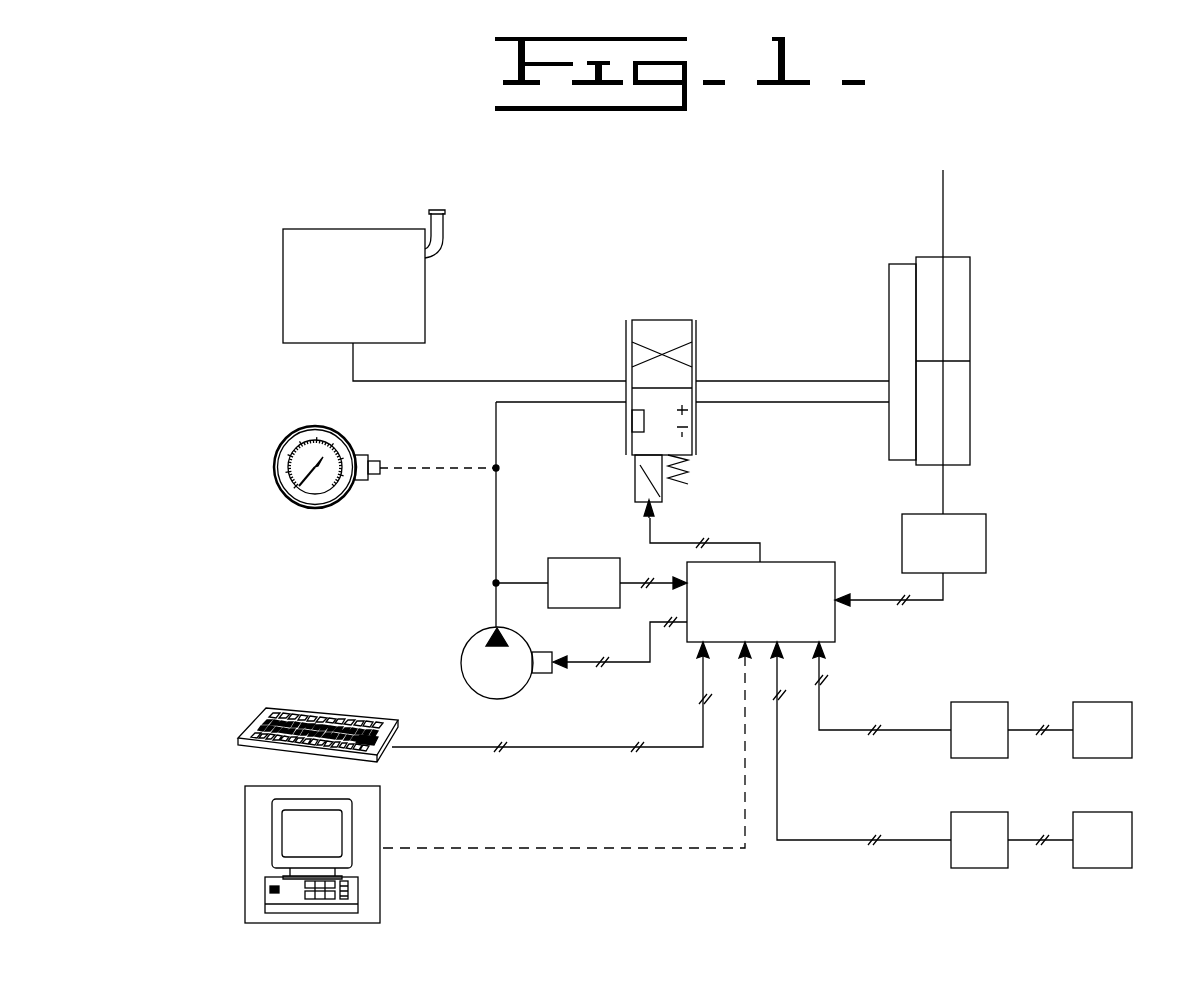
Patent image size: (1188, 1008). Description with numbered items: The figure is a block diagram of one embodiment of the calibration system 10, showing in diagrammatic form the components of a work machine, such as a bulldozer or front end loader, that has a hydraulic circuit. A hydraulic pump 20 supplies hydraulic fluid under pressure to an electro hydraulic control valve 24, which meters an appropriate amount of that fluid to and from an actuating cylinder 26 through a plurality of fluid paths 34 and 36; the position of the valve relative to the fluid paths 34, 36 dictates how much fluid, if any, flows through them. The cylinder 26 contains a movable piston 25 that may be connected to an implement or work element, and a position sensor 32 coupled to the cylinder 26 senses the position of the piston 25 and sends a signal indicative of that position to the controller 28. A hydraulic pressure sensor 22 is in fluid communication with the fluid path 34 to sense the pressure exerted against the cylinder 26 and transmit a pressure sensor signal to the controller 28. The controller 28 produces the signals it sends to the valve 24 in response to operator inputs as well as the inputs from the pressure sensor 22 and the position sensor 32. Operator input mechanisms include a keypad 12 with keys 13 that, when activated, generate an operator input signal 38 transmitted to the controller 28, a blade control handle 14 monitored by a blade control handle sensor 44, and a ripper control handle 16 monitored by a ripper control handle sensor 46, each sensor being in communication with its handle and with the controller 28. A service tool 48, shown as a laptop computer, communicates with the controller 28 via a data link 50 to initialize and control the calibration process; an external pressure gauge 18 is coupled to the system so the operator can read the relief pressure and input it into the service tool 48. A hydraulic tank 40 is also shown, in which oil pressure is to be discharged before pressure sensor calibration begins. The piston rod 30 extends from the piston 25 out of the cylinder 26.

The calibration system 10 is at (165, 640).
The keypad 12 is at (259, 719).
The keys 13 is at (367, 730).
The blade control handle 14 is at (1088, 743).
The ripper control handle 16 is at (1088, 853).
The pressure gauge 18 is at (279, 452).
The hydraulic pump 20 is at (463, 645).
The hydraulic pressure sensor 22 is at (570, 596).
The electro hydraulic control valve 24 is at (663, 320).
The piston 25 is at (952, 361).
The actuating cylinder 26 is at (960, 257).
The controller 28 is at (747, 613).
The piston rod 30 is at (946, 488).
The position sensor 32 is at (930, 557).
The fluid path 34 is at (766, 402).
The fluid path 36 is at (766, 381).
The operator input signal 38 is at (543, 748).
The hydraulic tank 40 is at (340, 302).
The blade control handle sensor 44 is at (966, 743).
The ripper control handle sensor 46 is at (966, 853).
The service tool 48 is at (245, 838).
The data link 50 is at (519, 850).